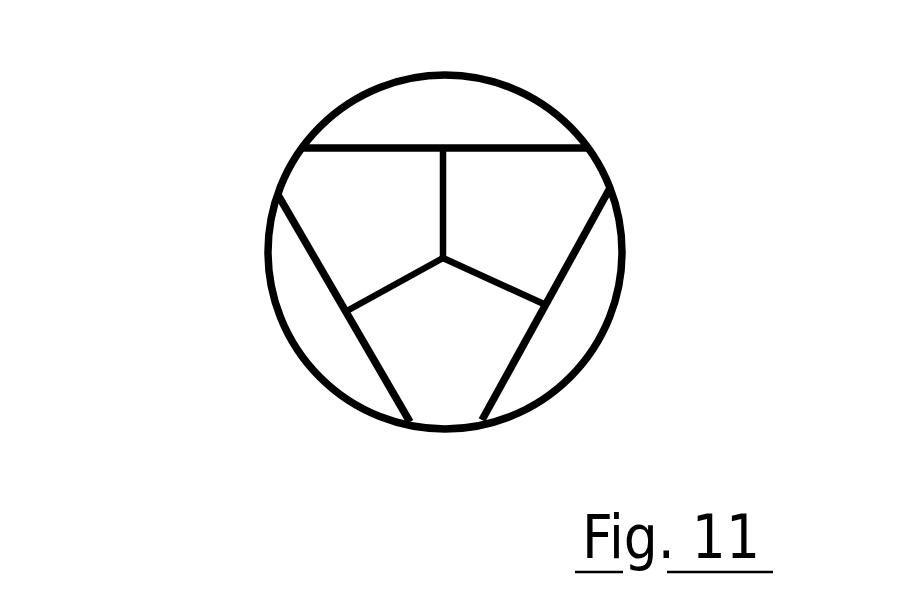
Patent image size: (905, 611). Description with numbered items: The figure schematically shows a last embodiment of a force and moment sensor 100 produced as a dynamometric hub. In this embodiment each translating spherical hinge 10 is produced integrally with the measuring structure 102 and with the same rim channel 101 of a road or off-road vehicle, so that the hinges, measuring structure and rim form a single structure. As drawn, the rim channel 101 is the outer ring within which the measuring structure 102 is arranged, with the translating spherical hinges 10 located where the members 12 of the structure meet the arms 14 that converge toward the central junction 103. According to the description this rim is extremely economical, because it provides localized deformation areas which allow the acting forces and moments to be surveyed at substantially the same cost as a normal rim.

The force and moment sensor 100 is at (402, 242).
The rim channel 101 is at (307, 370).
The measuring structure 102 is at (503, 273).
The central junction 103 is at (445, 256).
The translating spherical hinge 10 is at (455, 143).
The chord member 12 is at (387, 145).
The radial arm 14 is at (480, 251).